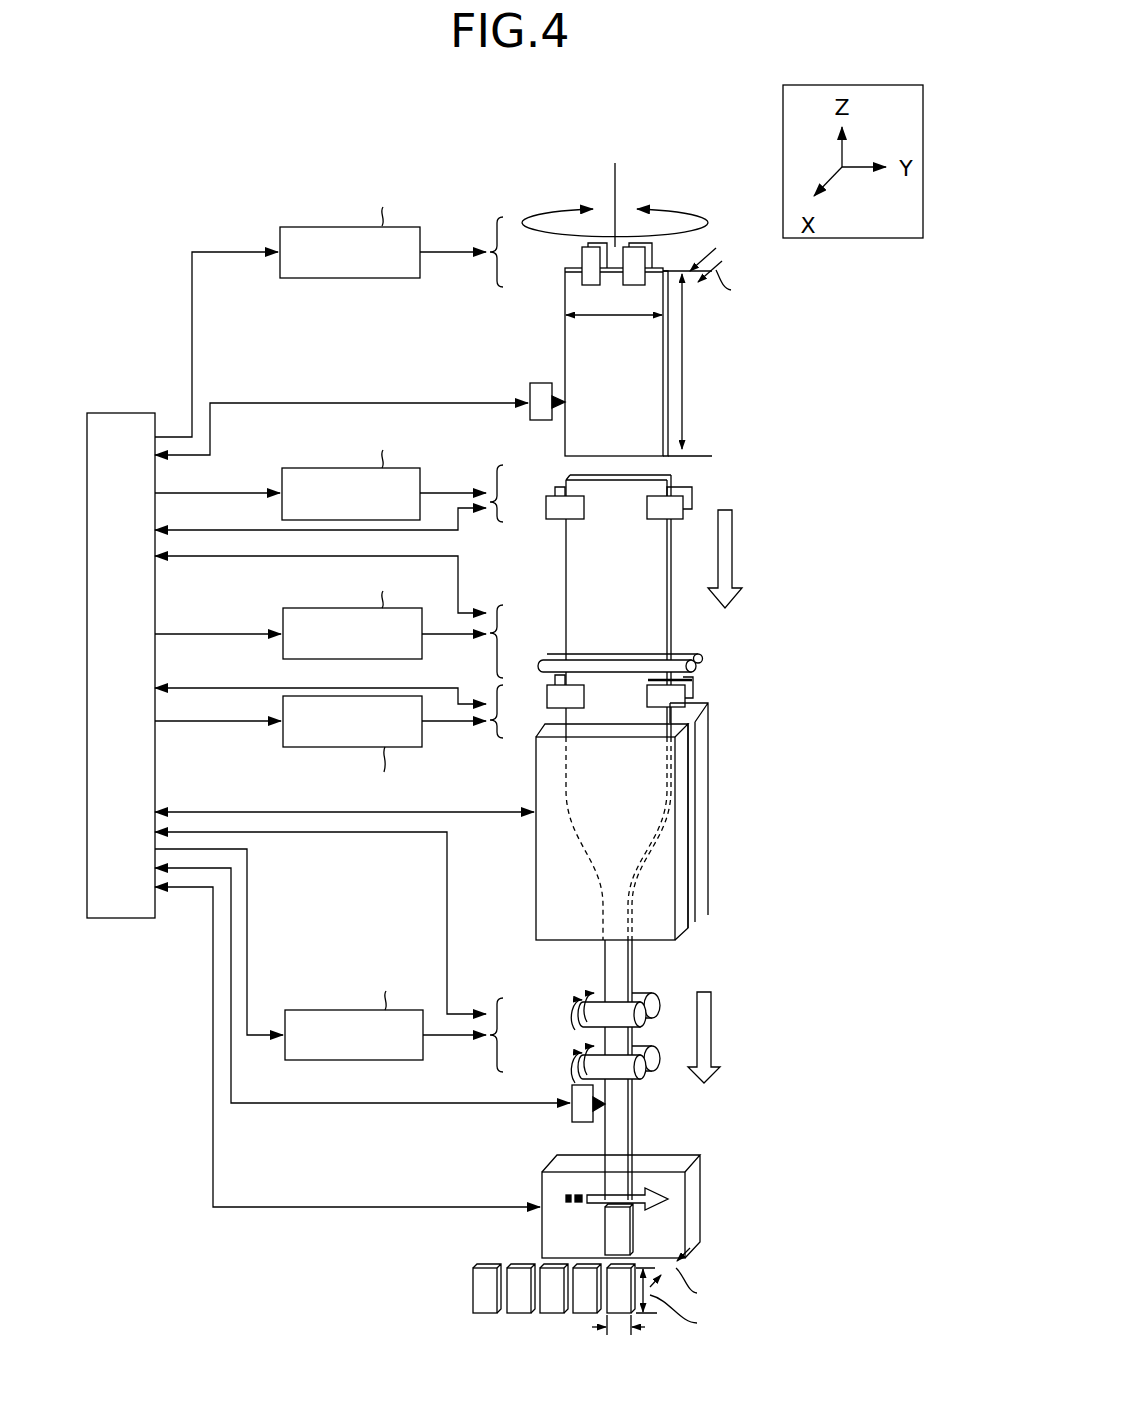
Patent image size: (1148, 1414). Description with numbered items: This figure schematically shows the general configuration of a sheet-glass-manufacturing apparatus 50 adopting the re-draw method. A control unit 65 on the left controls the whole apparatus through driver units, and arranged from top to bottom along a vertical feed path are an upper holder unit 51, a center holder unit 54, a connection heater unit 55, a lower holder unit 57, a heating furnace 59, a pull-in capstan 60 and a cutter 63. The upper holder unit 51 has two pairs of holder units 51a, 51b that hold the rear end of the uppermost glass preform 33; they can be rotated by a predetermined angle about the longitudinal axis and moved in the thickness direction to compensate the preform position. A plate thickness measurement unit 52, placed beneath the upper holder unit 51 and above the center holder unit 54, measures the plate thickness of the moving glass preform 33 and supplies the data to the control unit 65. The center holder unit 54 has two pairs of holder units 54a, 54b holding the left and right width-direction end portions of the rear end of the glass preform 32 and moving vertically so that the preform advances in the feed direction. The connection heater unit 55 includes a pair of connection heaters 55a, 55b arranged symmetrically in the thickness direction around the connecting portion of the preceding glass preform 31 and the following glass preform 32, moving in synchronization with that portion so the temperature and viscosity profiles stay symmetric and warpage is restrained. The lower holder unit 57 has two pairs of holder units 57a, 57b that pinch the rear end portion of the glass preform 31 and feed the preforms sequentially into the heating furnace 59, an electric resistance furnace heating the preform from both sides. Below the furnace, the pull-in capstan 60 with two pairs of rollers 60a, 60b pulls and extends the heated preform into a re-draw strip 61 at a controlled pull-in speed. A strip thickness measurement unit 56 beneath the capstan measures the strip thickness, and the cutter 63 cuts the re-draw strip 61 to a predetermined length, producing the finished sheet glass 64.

The sheet-glass-manufacturing apparatus 50 is at (526, 153).
The control unit 65 is at (116, 412).
The upper holder unit 51 is at (490, 284).
The holder unit 51a is at (592, 278).
The holder unit 51b is at (637, 258).
The glass preform 33 is at (650, 412).
The plate thickness measurement unit 52 is at (530, 383).
The glass preform 32 is at (643, 635).
The center holder unit 54 is at (490, 470).
The holder unit 54a is at (559, 514).
The holder unit 54b is at (658, 514).
The connection heater unit 55 is at (490, 644).
The connection heater 55a is at (700, 660).
The connection heater 55b is at (694, 670).
The glass preform 31 is at (680, 682).
The lower holder unit 57 is at (490, 735).
The holder unit 57a is at (574, 700).
The holder unit 57b is at (655, 700).
The heating furnace 59 is at (536, 884).
The re-draw strip 61 is at (620, 1100).
The pull-in capstan 60 is at (490, 1040).
The roller 60a is at (638, 1013).
The roller 60b is at (648, 1073).
The strip thickness measurement unit 56 is at (572, 1094).
The cutter 63 is at (542, 1237).
The sheet glass 64 is at (482, 1290).